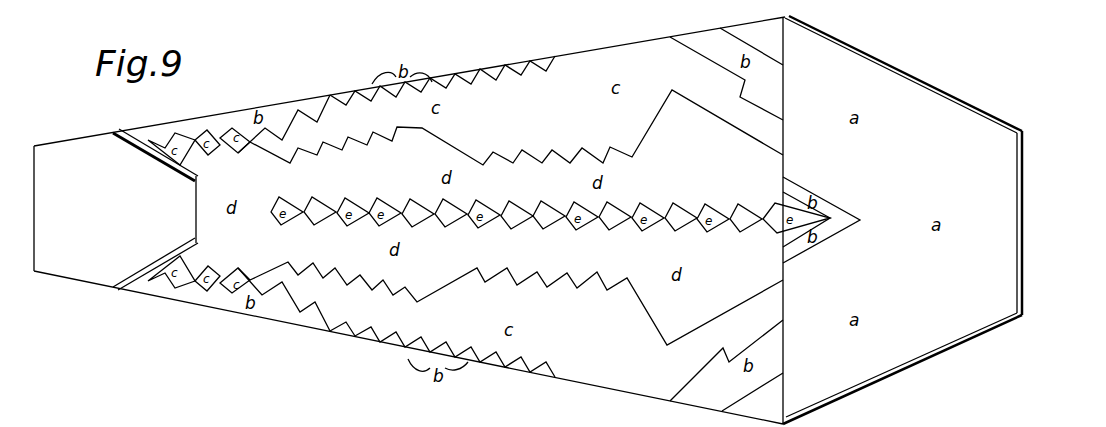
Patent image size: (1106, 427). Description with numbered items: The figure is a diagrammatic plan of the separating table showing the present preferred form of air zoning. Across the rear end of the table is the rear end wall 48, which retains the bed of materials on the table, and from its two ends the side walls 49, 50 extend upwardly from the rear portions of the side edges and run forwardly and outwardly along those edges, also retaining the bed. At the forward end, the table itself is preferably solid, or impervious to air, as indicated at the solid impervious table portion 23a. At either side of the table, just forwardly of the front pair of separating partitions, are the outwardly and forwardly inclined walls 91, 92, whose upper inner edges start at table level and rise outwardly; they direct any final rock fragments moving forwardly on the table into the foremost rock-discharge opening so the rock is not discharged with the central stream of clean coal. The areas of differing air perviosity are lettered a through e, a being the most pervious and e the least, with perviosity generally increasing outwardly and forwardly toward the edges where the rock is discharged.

The solid impervious table portion 23a is at (88, 197).
The rear end wall 48 is at (1020, 217).
The side wall 49 is at (921, 61).
The side wall 50 is at (912, 359).
The outwardly and forwardly inclined wall 91 is at (153, 160).
The outwardly and forwardly inclined wall 92 is at (162, 262).